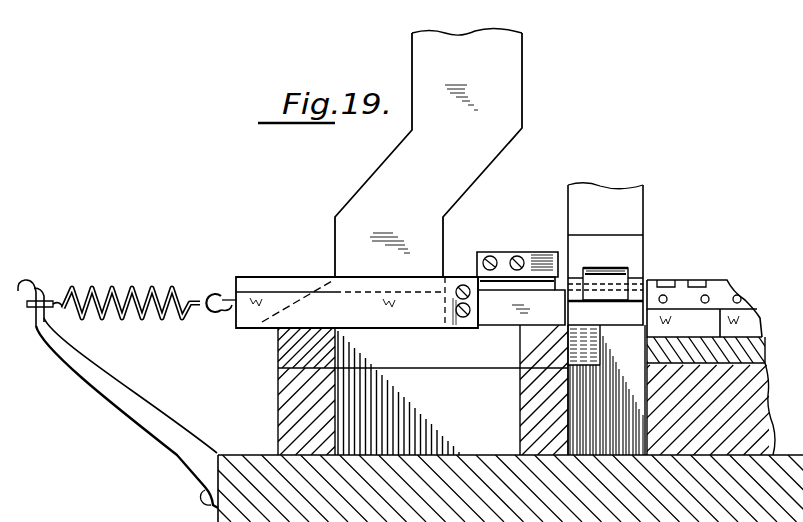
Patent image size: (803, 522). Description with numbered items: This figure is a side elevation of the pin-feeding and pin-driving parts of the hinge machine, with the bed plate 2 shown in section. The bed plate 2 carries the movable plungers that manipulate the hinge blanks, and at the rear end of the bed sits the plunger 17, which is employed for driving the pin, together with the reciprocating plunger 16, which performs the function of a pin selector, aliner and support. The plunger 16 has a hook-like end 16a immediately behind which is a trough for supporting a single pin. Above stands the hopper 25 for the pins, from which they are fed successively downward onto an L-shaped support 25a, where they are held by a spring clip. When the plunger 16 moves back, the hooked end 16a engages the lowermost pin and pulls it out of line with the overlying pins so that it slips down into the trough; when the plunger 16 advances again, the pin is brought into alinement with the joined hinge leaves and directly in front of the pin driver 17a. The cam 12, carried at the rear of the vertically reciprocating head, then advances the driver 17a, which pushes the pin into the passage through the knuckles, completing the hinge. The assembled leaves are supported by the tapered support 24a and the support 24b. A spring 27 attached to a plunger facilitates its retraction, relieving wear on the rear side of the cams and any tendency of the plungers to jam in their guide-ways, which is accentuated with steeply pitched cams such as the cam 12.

The bed plate 2 is at (278, 385).
The cam 12 is at (428, 152).
The reciprocating plunger 16 is at (606, 366).
The hook-like end 16a is at (590, 270).
The plunger 17 is at (468, 273).
The pin driver 17a is at (500, 280).
The support 24a is at (752, 318).
The support 24b is at (709, 336).
The hopper 25 is at (605, 230).
The L-shaped support 25a is at (610, 262).
The springs 27 is at (119, 289).